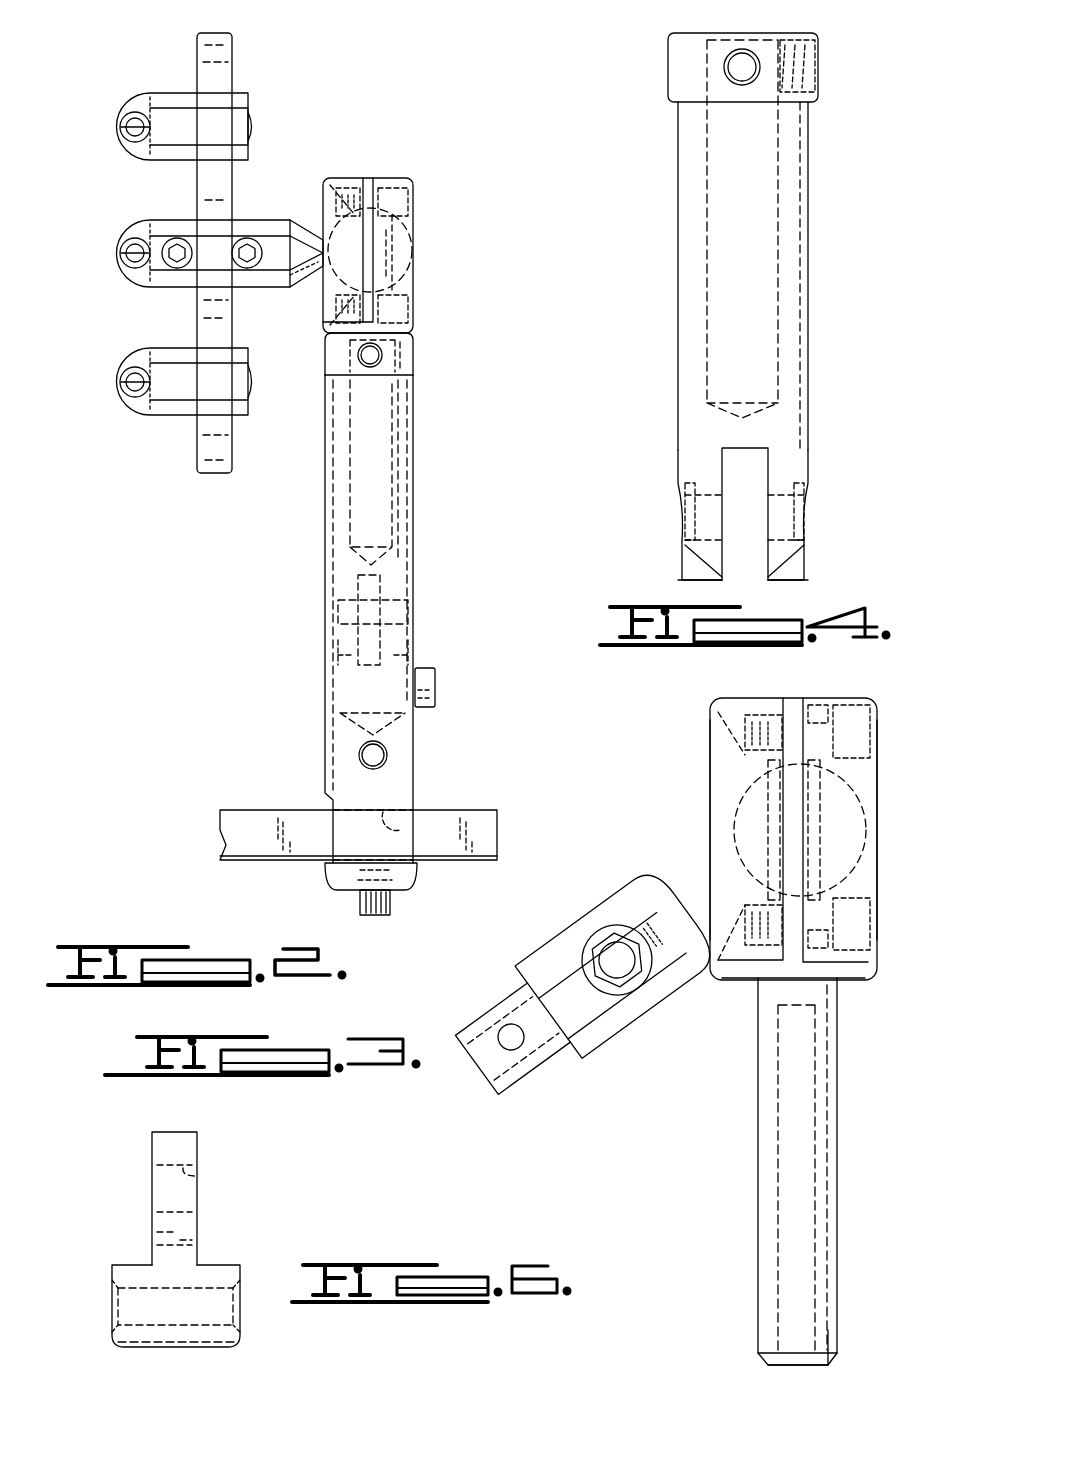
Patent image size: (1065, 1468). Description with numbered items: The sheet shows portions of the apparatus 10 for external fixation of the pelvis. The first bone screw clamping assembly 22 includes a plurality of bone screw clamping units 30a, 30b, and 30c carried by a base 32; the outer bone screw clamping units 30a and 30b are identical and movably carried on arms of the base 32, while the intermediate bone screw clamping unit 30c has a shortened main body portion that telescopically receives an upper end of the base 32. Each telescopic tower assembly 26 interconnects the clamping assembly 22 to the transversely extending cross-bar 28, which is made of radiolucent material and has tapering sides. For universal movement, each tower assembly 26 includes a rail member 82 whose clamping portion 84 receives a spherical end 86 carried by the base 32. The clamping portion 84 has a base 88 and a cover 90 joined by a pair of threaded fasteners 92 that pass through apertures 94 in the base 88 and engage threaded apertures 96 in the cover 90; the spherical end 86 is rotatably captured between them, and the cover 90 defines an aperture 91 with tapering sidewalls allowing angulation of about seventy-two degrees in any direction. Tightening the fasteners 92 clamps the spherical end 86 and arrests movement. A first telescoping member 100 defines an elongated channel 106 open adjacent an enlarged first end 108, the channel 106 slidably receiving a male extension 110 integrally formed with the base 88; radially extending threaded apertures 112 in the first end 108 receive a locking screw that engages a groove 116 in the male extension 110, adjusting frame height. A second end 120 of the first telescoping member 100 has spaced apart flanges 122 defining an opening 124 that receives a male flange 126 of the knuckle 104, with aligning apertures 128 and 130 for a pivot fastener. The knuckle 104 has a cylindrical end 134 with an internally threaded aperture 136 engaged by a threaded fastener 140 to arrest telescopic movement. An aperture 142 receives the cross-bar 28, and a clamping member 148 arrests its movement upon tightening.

In FIG. 2, the apparatus 10 is at (378, 104).
In FIG. 2, the first bone screw clamping assembly 22 is at (194, 50).
In FIG. 2, the telescopic tower assembly 26 is at (418, 497).
In FIG. 2, the cross-bar 28 is at (238, 812).
In FIG. 2, the outer bone screw clamping unit 30a is at (100, 121).
In FIG. 2, the outer bone screw clamping unit 30b is at (100, 242).
In FIG. 2, the intermediate bone screw clamping unit 30c is at (100, 371).
In FIG. 2, the base 32 is at (293, 214).
In FIG. 3, the base 32 is at (565, 926).
In FIG. 2, the rail member 82 is at (418, 236).
In FIG. 3, the rail member 82 is at (706, 760).
In FIG. 3, the clamping portion 84 is at (870, 982).
In FIG. 3, the spherical end 86 is at (730, 822).
In FIG. 3, the base 88 is at (877, 700).
In FIG. 3, the cover 90 is at (712, 700).
In FIG. 3, the aperture 91 is at (712, 732).
In FIG. 3, the threaded fasteners 92 is at (850, 706).
In FIG. 3, the apertures 94 is at (818, 712).
In FIG. 3, the threaded apertures 96 is at (758, 712).
In FIG. 2, the first telescoping member 100 is at (418, 351).
In FIG. 4, the first telescoping member 100 is at (664, 50).
In FIG. 6, the knuckle 104 is at (96, 1170).
In FIG. 4, the elongated channel 106 is at (762, 200).
In FIG. 4, the enlarged first end 108 is at (818, 36).
In FIG. 3, the male extension 110 is at (754, 1124).
In FIG. 4, the radially extending apertures 112 is at (735, 60).
In FIG. 3, the groove 116 is at (830, 1298).
In FIG. 4, the second end 120 is at (810, 562).
In FIG. 4, the flanges 122 is at (676, 466).
In FIG. 4, the opening 124 is at (764, 462).
In FIG. 6, the male flange 126 is at (198, 1150).
In FIG. 4, the apertures 128 is at (690, 513).
In FIG. 6, the aperture 130 is at (196, 1176).
In FIG. 6, the cylindrical end 134 is at (240, 1274).
In FIG. 6, the internally threaded aperture 136 is at (200, 1315).
In FIG. 2, the threaded fastener 140 is at (433, 672).
In FIG. 2, the aperture 142 is at (402, 832).
In FIG. 2, the clamping member 148 is at (359, 905).